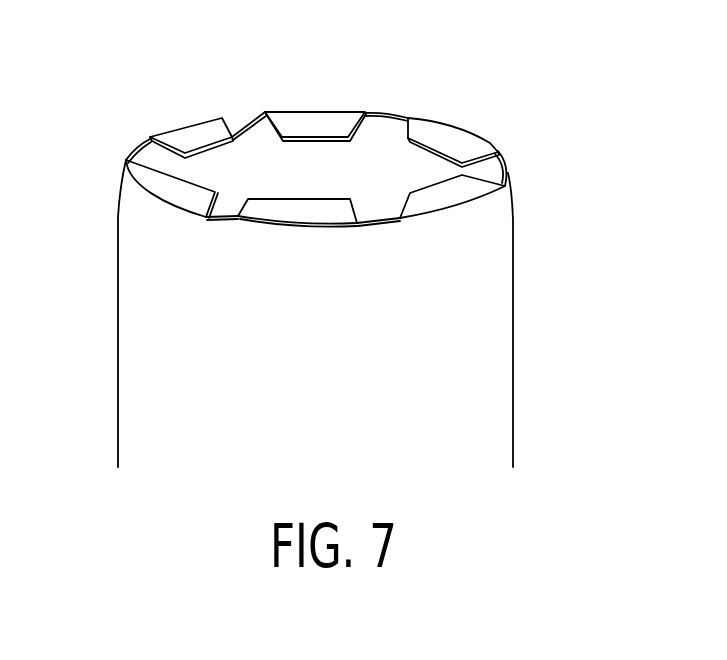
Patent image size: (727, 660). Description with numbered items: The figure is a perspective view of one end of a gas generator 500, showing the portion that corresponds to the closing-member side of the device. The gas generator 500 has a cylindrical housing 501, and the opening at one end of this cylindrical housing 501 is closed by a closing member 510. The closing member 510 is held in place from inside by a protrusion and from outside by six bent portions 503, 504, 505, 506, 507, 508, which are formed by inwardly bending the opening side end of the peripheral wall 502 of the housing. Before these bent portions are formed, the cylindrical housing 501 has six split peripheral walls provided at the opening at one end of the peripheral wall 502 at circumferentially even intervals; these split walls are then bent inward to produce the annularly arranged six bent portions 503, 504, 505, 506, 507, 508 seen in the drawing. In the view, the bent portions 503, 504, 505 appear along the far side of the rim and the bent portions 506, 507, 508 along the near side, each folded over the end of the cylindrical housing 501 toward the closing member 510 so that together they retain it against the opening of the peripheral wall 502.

The gas generator 500 is at (525, 333).
The cylindrical housing 501 is at (148, 337).
The peripheral wall 502 is at (120, 210).
The bent portion 503 is at (188, 135).
The bent portion 504 is at (310, 120).
The bent portion 505 is at (445, 135).
The bent portion 506 is at (450, 202).
The bent portion 507 is at (298, 212).
The bent portion 508 is at (165, 190).
The closing member 510 is at (367, 157).